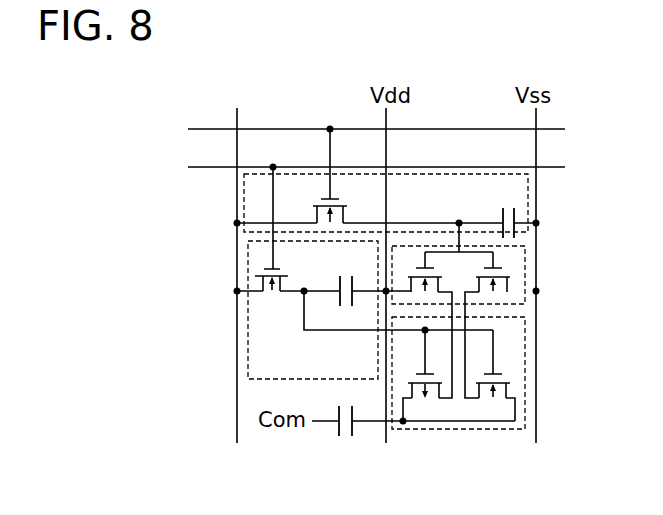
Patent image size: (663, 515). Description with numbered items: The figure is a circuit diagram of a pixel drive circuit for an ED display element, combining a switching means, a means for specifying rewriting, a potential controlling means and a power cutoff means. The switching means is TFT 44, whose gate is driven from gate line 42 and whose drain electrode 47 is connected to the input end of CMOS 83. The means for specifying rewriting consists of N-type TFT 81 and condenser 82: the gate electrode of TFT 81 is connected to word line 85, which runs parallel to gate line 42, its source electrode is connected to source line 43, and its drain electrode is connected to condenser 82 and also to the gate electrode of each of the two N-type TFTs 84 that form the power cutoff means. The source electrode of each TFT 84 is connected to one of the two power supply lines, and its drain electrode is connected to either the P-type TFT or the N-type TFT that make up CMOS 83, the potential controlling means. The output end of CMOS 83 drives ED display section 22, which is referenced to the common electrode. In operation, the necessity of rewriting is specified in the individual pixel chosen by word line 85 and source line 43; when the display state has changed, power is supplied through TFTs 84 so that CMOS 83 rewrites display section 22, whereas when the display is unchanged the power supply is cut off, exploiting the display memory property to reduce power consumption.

The source line 43 is at (239, 263).
The word line 85 is at (363, 130).
The gate line 42 is at (362, 212).
The N-type TFT 81 is at (343, 202).
The condenser 82 is at (502, 215).
The drain electrode 47 is at (283, 284).
The TFT 44 is at (271, 298).
The N-type TFTs 84 is at (432, 271).
The CMOS 83 is at (476, 412).
The ED display section 22 is at (346, 435).